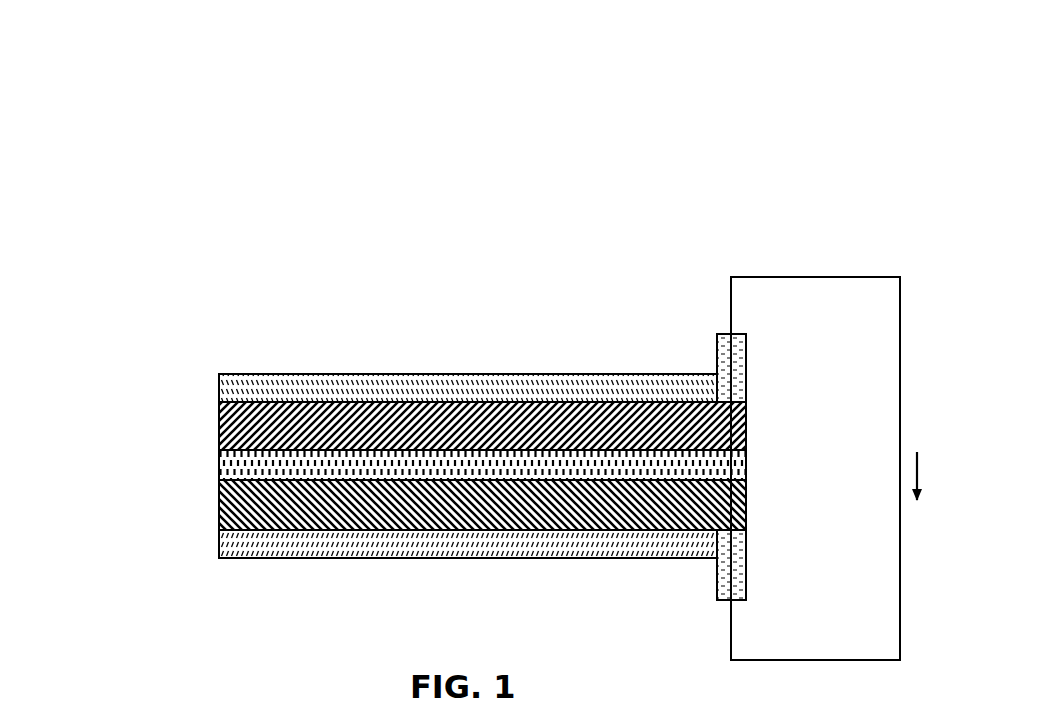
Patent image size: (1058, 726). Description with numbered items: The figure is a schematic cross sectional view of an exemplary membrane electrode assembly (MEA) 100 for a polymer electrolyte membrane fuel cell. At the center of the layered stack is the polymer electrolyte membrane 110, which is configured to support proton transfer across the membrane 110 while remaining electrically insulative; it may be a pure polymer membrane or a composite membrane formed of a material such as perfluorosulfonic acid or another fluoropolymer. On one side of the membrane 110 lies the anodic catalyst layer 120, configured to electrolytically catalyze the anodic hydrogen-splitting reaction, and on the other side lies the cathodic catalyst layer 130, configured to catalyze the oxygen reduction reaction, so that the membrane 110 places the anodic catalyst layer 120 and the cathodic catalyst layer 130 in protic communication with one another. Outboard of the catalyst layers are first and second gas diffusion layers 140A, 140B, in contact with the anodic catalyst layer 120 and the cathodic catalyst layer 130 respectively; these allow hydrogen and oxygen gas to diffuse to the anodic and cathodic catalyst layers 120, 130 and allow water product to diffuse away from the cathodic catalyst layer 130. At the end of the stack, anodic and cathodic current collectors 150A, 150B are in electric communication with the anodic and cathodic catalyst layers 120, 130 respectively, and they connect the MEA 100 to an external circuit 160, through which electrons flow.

The membrane electrode assembly 100 is at (252, 100).
The polymer electrolyte membrane 110 is at (210, 461).
The anodic catalyst layer 120 is at (210, 428).
The cathodic catalyst layer 130 is at (210, 515).
The first gas diffusion layer 140A is at (275, 366).
The second gas diffusion layer 140B is at (270, 568).
The anodic current collector 150A is at (709, 347).
The cathodic current collector 150B is at (711, 607).
The external circuit 160 is at (838, 268).